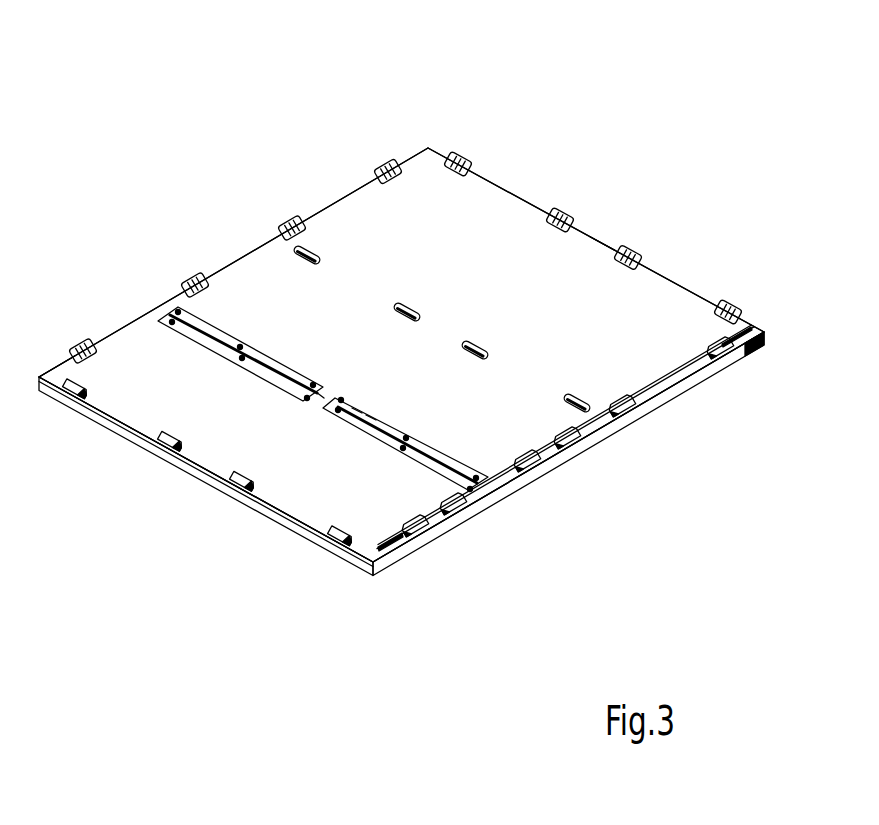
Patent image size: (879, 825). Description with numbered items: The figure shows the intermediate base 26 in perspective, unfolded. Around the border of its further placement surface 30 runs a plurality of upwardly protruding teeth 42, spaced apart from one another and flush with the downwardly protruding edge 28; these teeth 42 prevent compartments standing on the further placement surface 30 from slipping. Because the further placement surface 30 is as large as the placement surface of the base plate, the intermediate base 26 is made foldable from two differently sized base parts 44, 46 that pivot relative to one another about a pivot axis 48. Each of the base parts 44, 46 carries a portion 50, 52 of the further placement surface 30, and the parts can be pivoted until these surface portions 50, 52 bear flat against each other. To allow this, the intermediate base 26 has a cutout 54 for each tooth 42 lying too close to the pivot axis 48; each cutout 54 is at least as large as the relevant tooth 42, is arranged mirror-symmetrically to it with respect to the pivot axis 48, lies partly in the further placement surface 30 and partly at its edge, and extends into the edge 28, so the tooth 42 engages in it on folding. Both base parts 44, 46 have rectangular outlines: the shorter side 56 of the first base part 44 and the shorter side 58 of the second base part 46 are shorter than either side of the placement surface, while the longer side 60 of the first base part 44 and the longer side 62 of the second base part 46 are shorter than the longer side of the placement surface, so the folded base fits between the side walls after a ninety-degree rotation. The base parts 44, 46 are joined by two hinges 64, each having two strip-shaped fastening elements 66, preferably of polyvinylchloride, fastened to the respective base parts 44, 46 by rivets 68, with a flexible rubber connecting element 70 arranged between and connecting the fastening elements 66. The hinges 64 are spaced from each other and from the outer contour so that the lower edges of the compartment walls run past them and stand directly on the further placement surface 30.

The intermediate base 26 is at (515, 122).
The edge 28 is at (638, 417).
The further placement surface 30 is at (240, 347).
The teeth 42 is at (291, 220).
The first base part 44 is at (582, 230).
The second base part 46 is at (222, 451).
The pivot axis 48 is at (318, 397).
The surface portion of first base part 50 is at (467, 263).
The surface portion of second base part 52 is at (305, 468).
The cutout 54 is at (230, 262).
The shorter side of first base part 56 is at (257, 245).
The shorter side of second base part 58 is at (65, 347).
The longer side of first base part 60 is at (602, 242).
The longer side of second base part 62 is at (208, 486).
The hinge 64 is at (360, 412).
The fastening element 66 is at (230, 347).
The rivet 68 is at (176, 313).
The flexible connecting element 70 is at (374, 418).